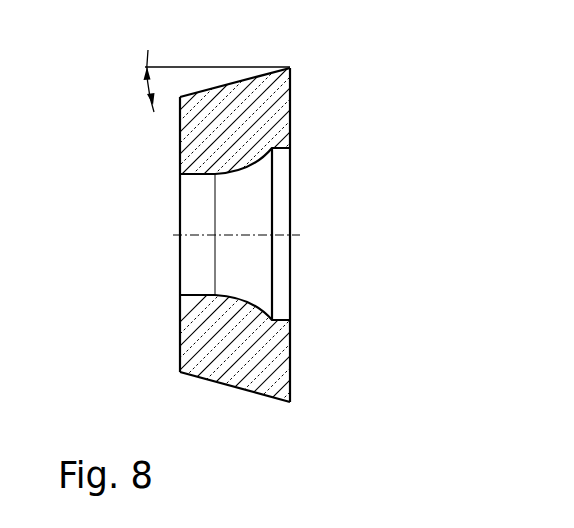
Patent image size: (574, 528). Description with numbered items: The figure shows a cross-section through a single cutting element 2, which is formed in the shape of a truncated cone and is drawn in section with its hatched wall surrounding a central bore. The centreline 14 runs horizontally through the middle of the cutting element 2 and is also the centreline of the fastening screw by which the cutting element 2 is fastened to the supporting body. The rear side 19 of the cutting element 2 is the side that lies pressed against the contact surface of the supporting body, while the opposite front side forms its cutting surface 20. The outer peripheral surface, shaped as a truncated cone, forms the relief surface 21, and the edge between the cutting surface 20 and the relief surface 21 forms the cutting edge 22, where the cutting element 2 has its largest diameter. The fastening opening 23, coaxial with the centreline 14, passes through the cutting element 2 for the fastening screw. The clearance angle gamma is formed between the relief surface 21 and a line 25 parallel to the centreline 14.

The cutting element 2 is at (303, 254).
The centreline 14 is at (195, 236).
The rear side 19 is at (177, 135).
The cutting surface 20 is at (290, 356).
The relief surface 21 is at (218, 383).
The cutting edge 22 is at (290, 69).
The fastening opening 23 is at (224, 210).
The line parallel to centreline 25 is at (225, 67).